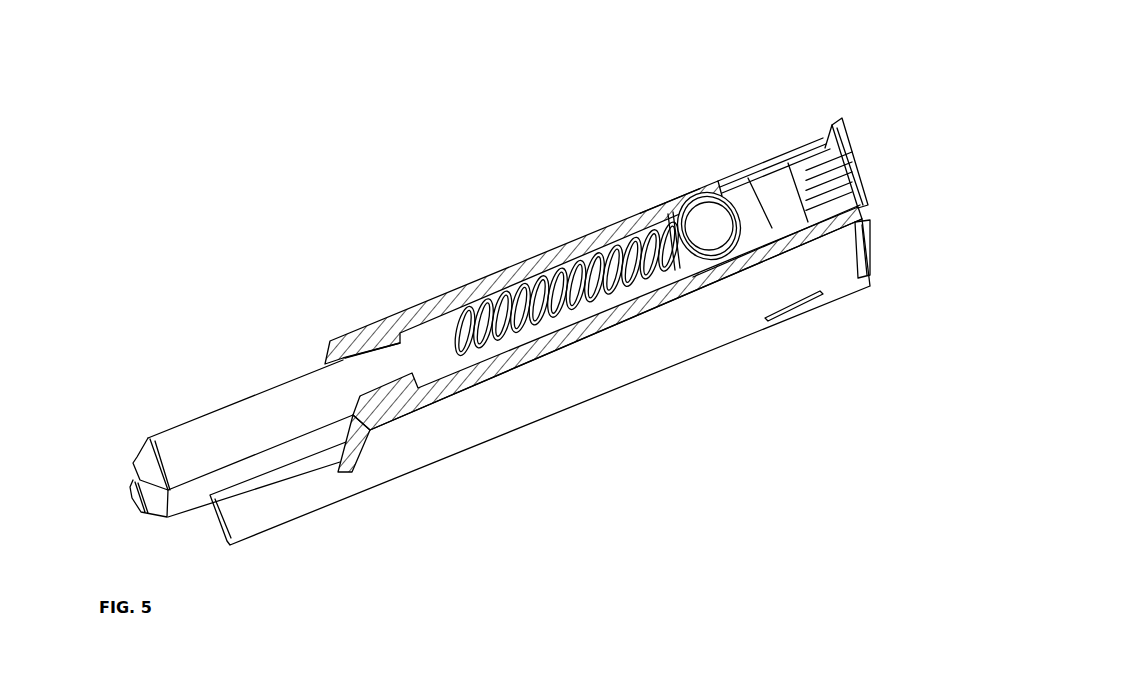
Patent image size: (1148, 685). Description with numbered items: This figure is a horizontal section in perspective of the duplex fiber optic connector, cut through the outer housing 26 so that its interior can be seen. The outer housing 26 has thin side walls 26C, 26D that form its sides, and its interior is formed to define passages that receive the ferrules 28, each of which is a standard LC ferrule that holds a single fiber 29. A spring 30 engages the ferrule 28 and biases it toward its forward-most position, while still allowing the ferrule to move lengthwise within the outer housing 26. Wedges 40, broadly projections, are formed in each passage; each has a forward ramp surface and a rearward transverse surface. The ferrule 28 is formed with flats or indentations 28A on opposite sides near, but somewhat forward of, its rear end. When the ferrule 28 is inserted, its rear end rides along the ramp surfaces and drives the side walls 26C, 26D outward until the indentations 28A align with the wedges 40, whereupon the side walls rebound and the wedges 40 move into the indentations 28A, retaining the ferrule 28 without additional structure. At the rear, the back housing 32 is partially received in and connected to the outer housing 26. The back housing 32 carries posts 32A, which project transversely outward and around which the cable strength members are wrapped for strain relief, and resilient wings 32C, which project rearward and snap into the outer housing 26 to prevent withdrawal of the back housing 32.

The outer housing 26 is at (540, 359).
The side wall 26C is at (512, 408).
The side wall 26D is at (653, 217).
The ferrule 28 is at (228, 485).
The indentation 28A is at (378, 348).
The fiber 29 is at (656, 262).
The spring 30 is at (510, 262).
The back housing 32 is at (814, 196).
The post 32A is at (707, 210).
The wing 32C is at (793, 197).
The wedge 40 is at (398, 387).